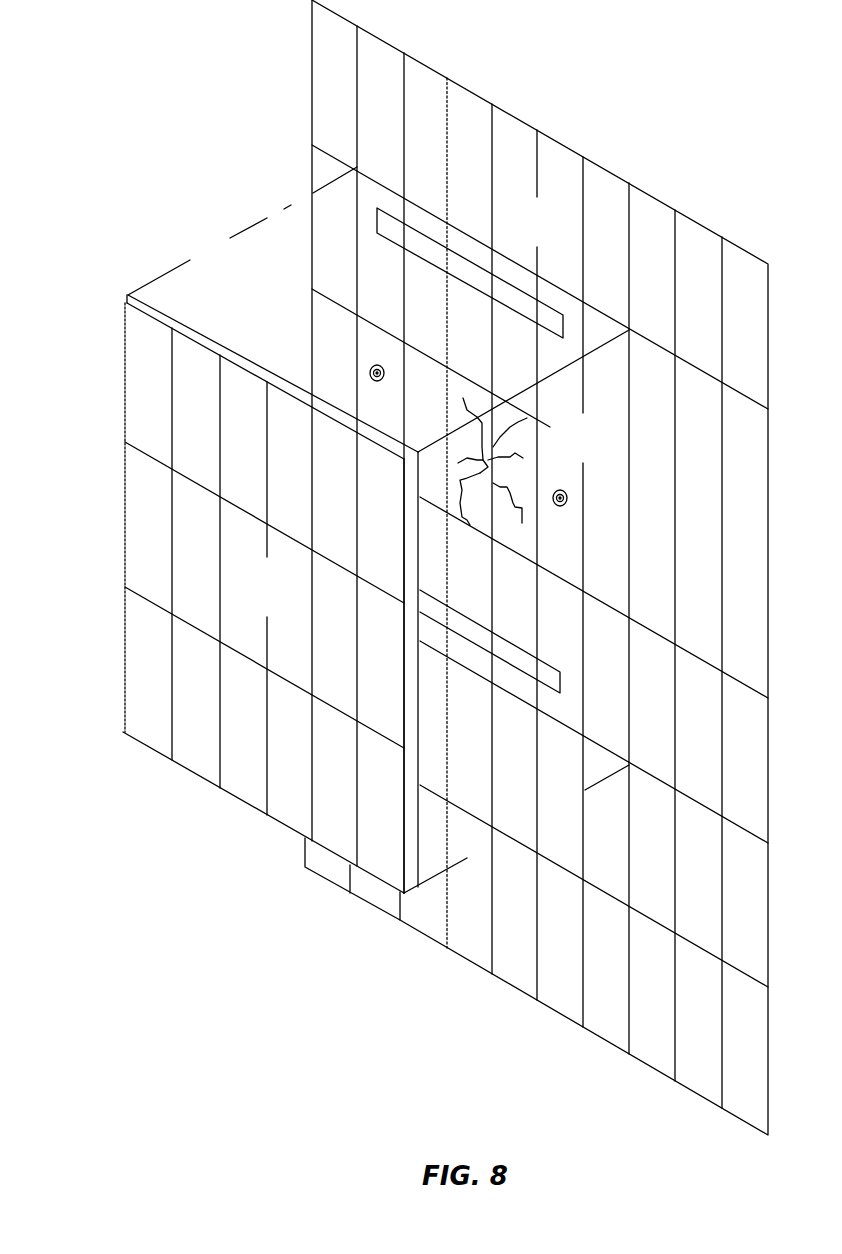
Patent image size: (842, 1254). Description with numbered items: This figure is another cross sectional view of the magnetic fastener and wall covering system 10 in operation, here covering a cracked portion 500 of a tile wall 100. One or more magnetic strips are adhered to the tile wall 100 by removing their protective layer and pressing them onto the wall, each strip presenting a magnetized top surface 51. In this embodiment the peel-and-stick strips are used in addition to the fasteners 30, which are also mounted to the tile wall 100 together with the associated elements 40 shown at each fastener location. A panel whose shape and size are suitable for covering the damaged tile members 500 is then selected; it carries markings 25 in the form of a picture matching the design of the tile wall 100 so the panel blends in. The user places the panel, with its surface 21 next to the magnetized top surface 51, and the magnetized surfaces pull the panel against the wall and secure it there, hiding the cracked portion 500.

The system 10 is at (218, 93).
The tile wall 100 is at (562, 237).
The decorative elements 25 is at (158, 528).
The front facing surface 21 is at (280, 600).
The magnetized top surface 51 is at (426, 247).
The anchor grommet 40 is at (385, 376).
The fasteners 30 is at (372, 378).
The cracked portion 500 is at (531, 443).